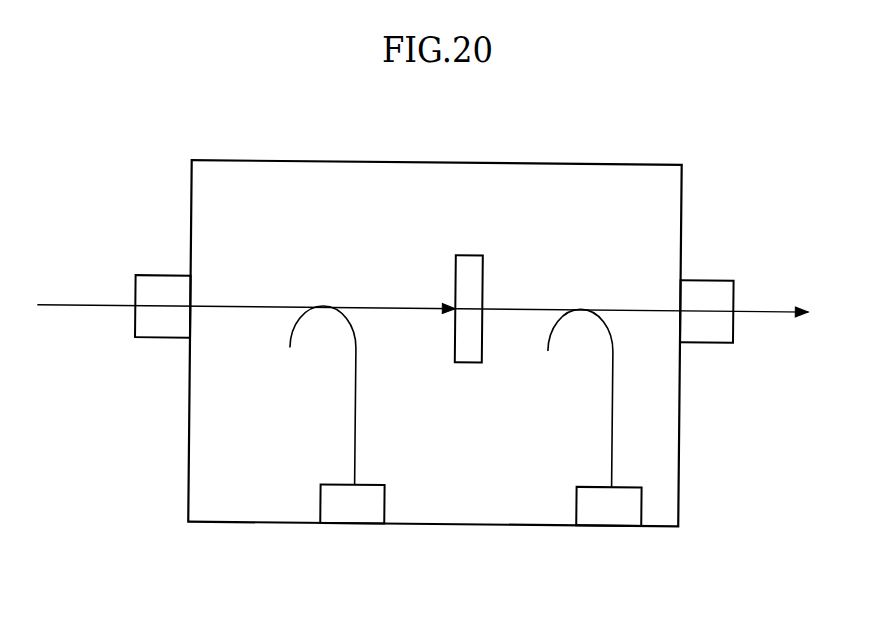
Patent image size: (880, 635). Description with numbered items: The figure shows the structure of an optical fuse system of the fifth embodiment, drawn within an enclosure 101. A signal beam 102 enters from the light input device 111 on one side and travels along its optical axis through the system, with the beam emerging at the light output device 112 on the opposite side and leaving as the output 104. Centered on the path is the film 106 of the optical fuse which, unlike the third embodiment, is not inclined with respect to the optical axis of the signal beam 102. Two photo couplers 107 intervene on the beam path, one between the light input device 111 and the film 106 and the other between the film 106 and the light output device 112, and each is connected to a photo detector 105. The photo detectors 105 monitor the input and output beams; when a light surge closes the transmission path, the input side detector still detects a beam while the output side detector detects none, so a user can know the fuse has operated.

The housing / enclosure of beam guiding apparatus 101 is at (338, 163).
The signal beam 102 is at (75, 309).
The emitted laser beam 104 is at (773, 311).
The photo detectors 105 is at (353, 524).
The film 106 is at (462, 362).
The photo couplers 107 is at (320, 307).
The light input device 111 is at (167, 275).
The light output device 112 is at (707, 344).